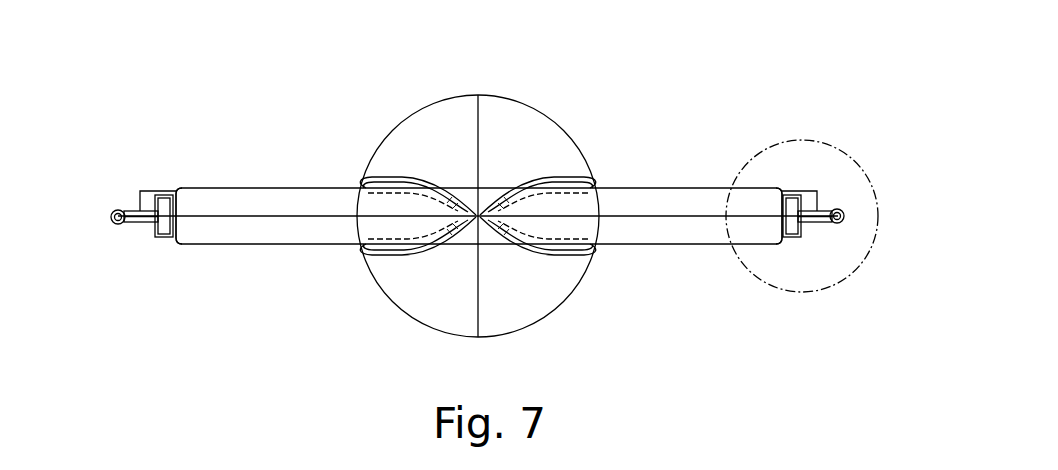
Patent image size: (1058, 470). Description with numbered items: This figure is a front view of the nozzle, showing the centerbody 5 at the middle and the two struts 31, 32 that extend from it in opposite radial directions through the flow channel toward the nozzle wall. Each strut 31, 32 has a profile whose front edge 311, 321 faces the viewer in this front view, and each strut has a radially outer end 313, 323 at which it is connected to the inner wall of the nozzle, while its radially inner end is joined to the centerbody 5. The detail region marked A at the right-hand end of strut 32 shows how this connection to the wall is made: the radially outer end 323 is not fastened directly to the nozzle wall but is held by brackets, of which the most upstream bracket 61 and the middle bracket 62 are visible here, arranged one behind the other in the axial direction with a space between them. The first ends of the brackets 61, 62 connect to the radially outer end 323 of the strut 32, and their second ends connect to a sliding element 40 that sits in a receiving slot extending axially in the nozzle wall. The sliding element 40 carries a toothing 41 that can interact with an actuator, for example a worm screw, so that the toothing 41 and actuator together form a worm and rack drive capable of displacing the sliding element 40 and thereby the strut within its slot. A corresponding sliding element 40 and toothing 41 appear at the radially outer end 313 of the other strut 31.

The centerbody 5 is at (534, 108).
The strut 31 is at (265, 244).
The strut 32 is at (669, 245).
The front edge 311 is at (333, 244).
The front edge 321 is at (609, 245).
The radially outer end 313 is at (175, 243).
The radially outer end 323 is at (782, 244).
The sliding element 40 is at (140, 191).
The toothing 41 is at (114, 212).
The bracket 61 is at (153, 236).
The bracket 62 is at (157, 191).
The detail region A is at (847, 152).